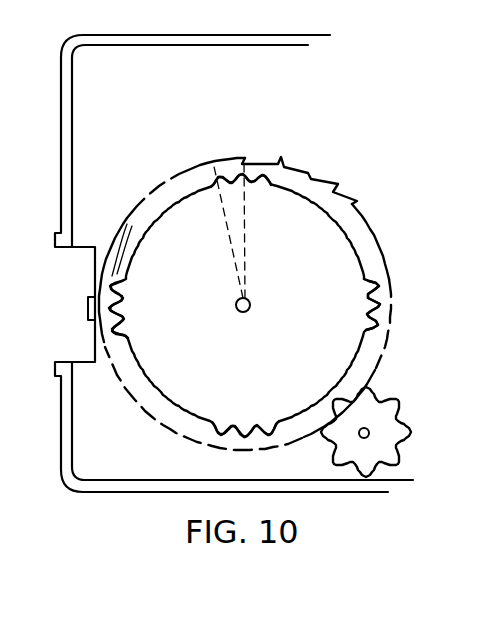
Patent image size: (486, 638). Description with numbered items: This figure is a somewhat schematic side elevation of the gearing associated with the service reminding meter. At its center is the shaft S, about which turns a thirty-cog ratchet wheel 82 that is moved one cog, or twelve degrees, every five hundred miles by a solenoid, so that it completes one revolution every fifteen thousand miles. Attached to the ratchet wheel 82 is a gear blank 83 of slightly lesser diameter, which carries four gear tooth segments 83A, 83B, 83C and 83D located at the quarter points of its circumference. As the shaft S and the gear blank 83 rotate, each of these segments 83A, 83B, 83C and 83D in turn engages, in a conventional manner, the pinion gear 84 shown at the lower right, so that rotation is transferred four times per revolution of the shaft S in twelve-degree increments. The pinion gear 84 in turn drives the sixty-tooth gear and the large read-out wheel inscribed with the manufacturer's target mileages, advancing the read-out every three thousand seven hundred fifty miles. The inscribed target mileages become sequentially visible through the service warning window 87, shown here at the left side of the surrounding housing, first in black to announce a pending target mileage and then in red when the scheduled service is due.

The ratchet wheel 82 is at (351, 182).
The gear blank 83 is at (355, 230).
The gear tooth segment 83A is at (250, 178).
The gear tooth segment 83B is at (381, 291).
The gear tooth segment 83C is at (243, 442).
The gear tooth segment 83D is at (126, 223).
The pinion gear 84 is at (310, 461).
The service warning window 87 is at (88, 306).
The shaft S is at (250, 304).